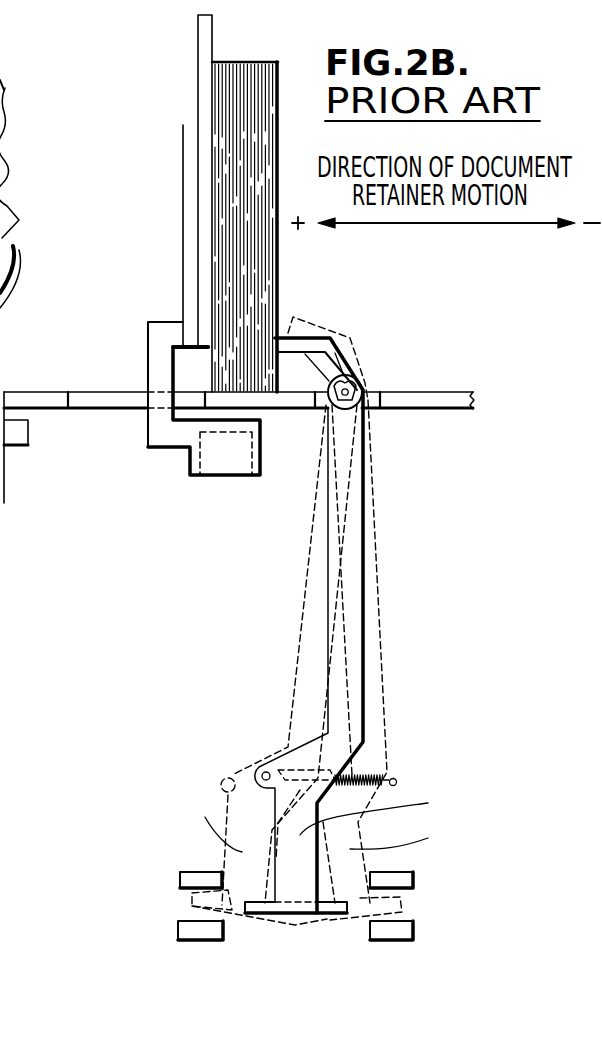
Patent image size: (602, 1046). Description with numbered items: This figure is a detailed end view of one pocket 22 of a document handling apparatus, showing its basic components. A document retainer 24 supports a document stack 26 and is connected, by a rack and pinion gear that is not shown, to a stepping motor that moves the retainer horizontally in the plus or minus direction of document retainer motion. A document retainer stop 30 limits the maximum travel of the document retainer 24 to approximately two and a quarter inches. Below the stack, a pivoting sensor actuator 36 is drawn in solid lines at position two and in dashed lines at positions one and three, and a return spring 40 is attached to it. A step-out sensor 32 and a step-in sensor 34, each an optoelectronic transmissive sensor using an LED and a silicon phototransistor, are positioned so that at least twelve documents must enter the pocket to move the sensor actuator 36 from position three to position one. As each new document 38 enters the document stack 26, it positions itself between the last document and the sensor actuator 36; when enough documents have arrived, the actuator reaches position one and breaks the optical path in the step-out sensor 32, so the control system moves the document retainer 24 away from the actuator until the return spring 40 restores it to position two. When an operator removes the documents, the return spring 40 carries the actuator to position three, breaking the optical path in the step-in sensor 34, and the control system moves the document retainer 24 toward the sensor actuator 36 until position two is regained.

The pocket 22 is at (150, 688).
The document retainer 24 is at (205, 78).
The document stack 26 is at (258, 274).
The document retainer stop 30 is at (26, 435).
The step-out sensor 32 is at (187, 930).
The step-in sensor 34 is at (413, 930).
The sensor actuator 36 is at (355, 587).
The document 38 is at (2, 115).
The return spring 40 is at (377, 776).